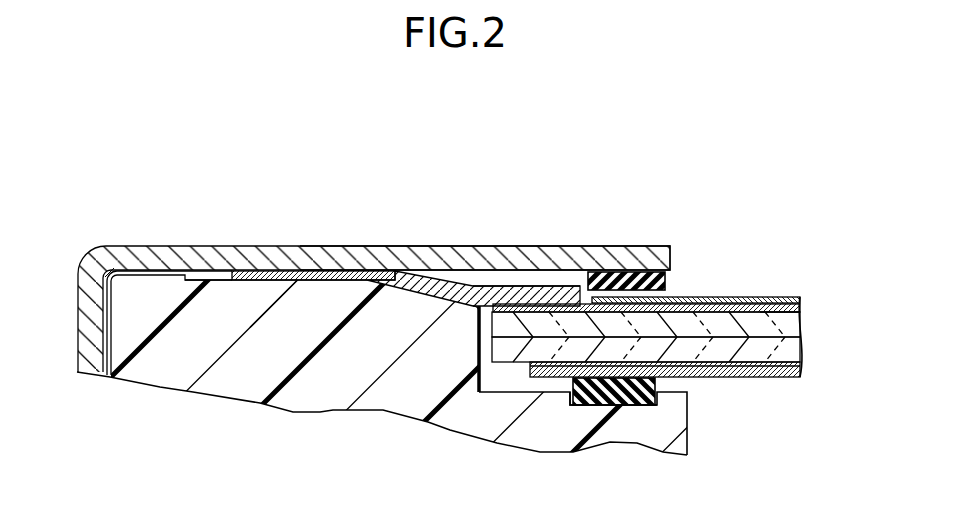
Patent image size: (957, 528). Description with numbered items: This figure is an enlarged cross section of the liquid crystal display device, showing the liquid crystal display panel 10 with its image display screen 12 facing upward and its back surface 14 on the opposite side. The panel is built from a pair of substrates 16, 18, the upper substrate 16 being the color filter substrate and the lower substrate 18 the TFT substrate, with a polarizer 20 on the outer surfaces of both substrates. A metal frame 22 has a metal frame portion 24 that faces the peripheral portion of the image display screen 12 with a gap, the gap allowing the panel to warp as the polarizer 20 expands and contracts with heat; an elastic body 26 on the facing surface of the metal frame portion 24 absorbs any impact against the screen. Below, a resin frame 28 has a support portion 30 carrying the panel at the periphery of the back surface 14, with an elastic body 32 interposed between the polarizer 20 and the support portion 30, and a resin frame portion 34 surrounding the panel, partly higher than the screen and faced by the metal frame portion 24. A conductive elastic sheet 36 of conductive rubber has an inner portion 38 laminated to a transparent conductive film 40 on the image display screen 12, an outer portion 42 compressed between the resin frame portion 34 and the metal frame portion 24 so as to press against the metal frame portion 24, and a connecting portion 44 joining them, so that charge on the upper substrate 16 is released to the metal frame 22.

The liquid crystal display panel 10 is at (703, 337).
The image display screen 12 is at (730, 298).
The back surface 14 is at (743, 378).
The upper substrate 16 is at (785, 323).
The lower substrate 18 is at (800, 347).
The polarizer 20 is at (797, 303).
The metal frame 22 is at (88, 309).
The metal frame portion 24 is at (457, 257).
The elastic body 26 is at (630, 280).
The resin frame 28 is at (337, 392).
The support portion 30 is at (538, 433).
The elastic body 32 is at (632, 408).
The resin frame portion 34 is at (398, 305).
The conductive elastic sheet 36 is at (550, 286).
The inner portion 38 is at (515, 286).
The transparent conductive film 40 is at (796, 307).
The outer portion 42 is at (292, 272).
The connecting portion 44 is at (428, 271).